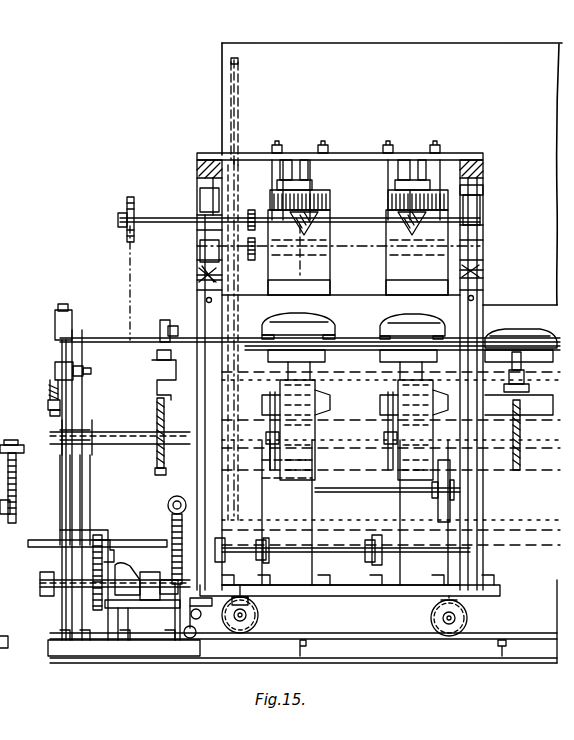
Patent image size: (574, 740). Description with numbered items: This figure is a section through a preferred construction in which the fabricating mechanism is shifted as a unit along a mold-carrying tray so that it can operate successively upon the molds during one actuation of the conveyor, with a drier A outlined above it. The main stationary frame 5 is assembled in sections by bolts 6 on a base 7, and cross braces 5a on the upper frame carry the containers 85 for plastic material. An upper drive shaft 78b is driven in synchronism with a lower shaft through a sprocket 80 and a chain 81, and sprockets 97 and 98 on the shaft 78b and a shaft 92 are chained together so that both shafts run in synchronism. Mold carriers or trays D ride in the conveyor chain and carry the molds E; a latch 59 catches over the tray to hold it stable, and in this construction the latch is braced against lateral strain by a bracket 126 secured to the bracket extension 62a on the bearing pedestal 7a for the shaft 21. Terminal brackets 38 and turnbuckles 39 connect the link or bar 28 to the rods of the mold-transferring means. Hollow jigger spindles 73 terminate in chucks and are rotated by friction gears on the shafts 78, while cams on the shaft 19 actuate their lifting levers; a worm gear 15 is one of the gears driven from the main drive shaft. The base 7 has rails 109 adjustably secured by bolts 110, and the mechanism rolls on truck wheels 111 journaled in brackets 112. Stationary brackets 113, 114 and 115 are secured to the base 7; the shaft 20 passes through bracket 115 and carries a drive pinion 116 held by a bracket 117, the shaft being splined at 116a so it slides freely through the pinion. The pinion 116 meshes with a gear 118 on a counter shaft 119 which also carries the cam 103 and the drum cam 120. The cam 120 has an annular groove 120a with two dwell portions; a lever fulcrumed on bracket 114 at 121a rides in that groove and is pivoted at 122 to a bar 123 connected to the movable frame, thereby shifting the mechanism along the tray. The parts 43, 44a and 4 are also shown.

The drier A is at (510, 48).
The cross braces 5a is at (364, 157).
The main stationary frame 5 is at (483, 502).
The upper drive shaft 78b is at (170, 218).
The sprocket 80 is at (125, 215).
The chain 81 is at (128, 273).
The sprocket 97 is at (252, 210).
The sprocket 98 is at (252, 262).
The shaft 92 is at (330, 272).
The containers for plastic material 85 is at (322, 282).
The latch 59 is at (105, 342).
The terminal brackets 38 is at (164, 320).
The turnbuckles 39 is at (158, 368).
The link or bar 28 is at (157, 410).
The mold carriers or trays D is at (262, 330).
The molds E is at (376, 318).
The hollow jigger spindles 73 is at (312, 402).
The shafts 78 is at (340, 492).
The shaft 19 is at (337, 548).
The bolts 6 is at (326, 582).
The worm gear 15 is at (194, 518).
The truck wheels 111 is at (258, 620).
The brackets 112 is at (256, 605).
The tracks or rails 109 is at (360, 636).
The bolts 110 is at (405, 648).
The base 7 is at (384, 660).
The bracket extension 62a is at (84, 406).
The bracket 126 is at (55, 372).
The shaft 21 is at (110, 444).
The bearing pedestal 7a is at (92, 486).
The bracket 43 is at (12, 438).
The rack 44a is at (16, 476).
The frame 4 is at (5, 534).
The bracket 117 is at (112, 538).
The drive pinion 116 is at (108, 538).
The shaft 20 is at (135, 544).
The spline 116a is at (160, 533).
The gear 118 is at (175, 496).
The annular groove or track 120a is at (135, 578).
The cam 103 is at (48, 578).
The counter shaft 119 is at (42, 594).
The fulcrum 121a is at (135, 608).
The stationary bracket 115 is at (98, 640).
The pivot 122 is at (108, 620).
The stationary bracket 114 is at (130, 630).
The drum or cam member 120 is at (162, 620).
The stationary bracket 113 is at (215, 640).
The bar 123 is at (204, 618).